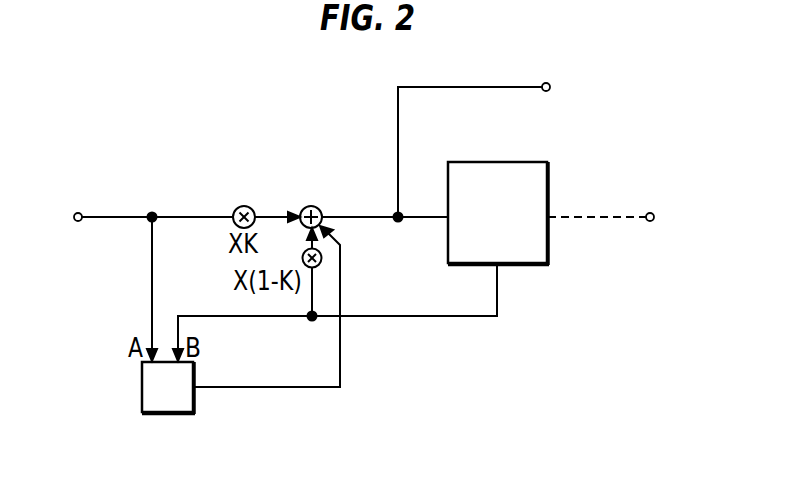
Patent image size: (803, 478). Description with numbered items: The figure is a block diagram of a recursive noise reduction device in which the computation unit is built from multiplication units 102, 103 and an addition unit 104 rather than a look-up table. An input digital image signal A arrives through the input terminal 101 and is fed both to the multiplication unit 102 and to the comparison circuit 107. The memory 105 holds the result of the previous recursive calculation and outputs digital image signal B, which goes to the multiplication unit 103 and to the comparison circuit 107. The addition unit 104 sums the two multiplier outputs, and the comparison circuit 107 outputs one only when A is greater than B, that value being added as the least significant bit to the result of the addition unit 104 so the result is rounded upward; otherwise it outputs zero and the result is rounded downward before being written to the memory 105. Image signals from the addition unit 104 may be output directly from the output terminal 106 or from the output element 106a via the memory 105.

The input terminal 101 is at (79, 213).
The multiplication unit 102 is at (246, 206).
The multiplication unit 103 is at (322, 258).
The addition unit 104 is at (313, 206).
The memory 105 is at (512, 162).
The output terminal 106 is at (547, 83).
The output element 106a is at (651, 213).
The comparison circuit 107 is at (155, 413).